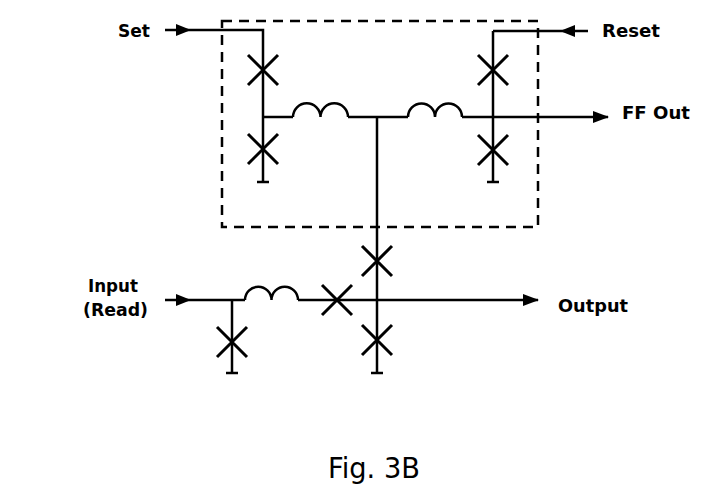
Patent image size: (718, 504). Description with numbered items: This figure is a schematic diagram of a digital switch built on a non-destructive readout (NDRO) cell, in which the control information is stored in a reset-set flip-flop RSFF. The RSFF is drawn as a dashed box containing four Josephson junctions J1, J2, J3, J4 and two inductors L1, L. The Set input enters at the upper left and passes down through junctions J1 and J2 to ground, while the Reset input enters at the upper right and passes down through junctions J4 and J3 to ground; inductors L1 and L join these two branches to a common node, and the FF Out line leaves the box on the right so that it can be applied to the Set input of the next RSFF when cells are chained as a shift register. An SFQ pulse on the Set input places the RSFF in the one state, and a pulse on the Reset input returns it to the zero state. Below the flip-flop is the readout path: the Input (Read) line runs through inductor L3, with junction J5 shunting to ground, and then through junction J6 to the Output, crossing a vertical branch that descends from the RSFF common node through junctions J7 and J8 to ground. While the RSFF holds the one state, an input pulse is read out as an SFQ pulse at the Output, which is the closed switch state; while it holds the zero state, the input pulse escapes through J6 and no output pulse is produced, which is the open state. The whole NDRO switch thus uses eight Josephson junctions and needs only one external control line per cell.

The reset-set flip-flop RSFF is at (380, 124).
The Josephson junction J1 is at (255, 73).
The Josephson junction J2 is at (255, 149).
The Josephson junction J3 is at (504, 150).
The Josephson junction J4 is at (504, 70).
The Josephson junction J5 is at (223, 342).
The Josephson junction J6 is at (337, 290).
The Josephson junction J7 is at (391, 264).
The Josephson junction J8 is at (391, 343).
The inductor L1 is at (320, 101).
The inductor L is at (435, 101).
The inductor L3 is at (271, 286).